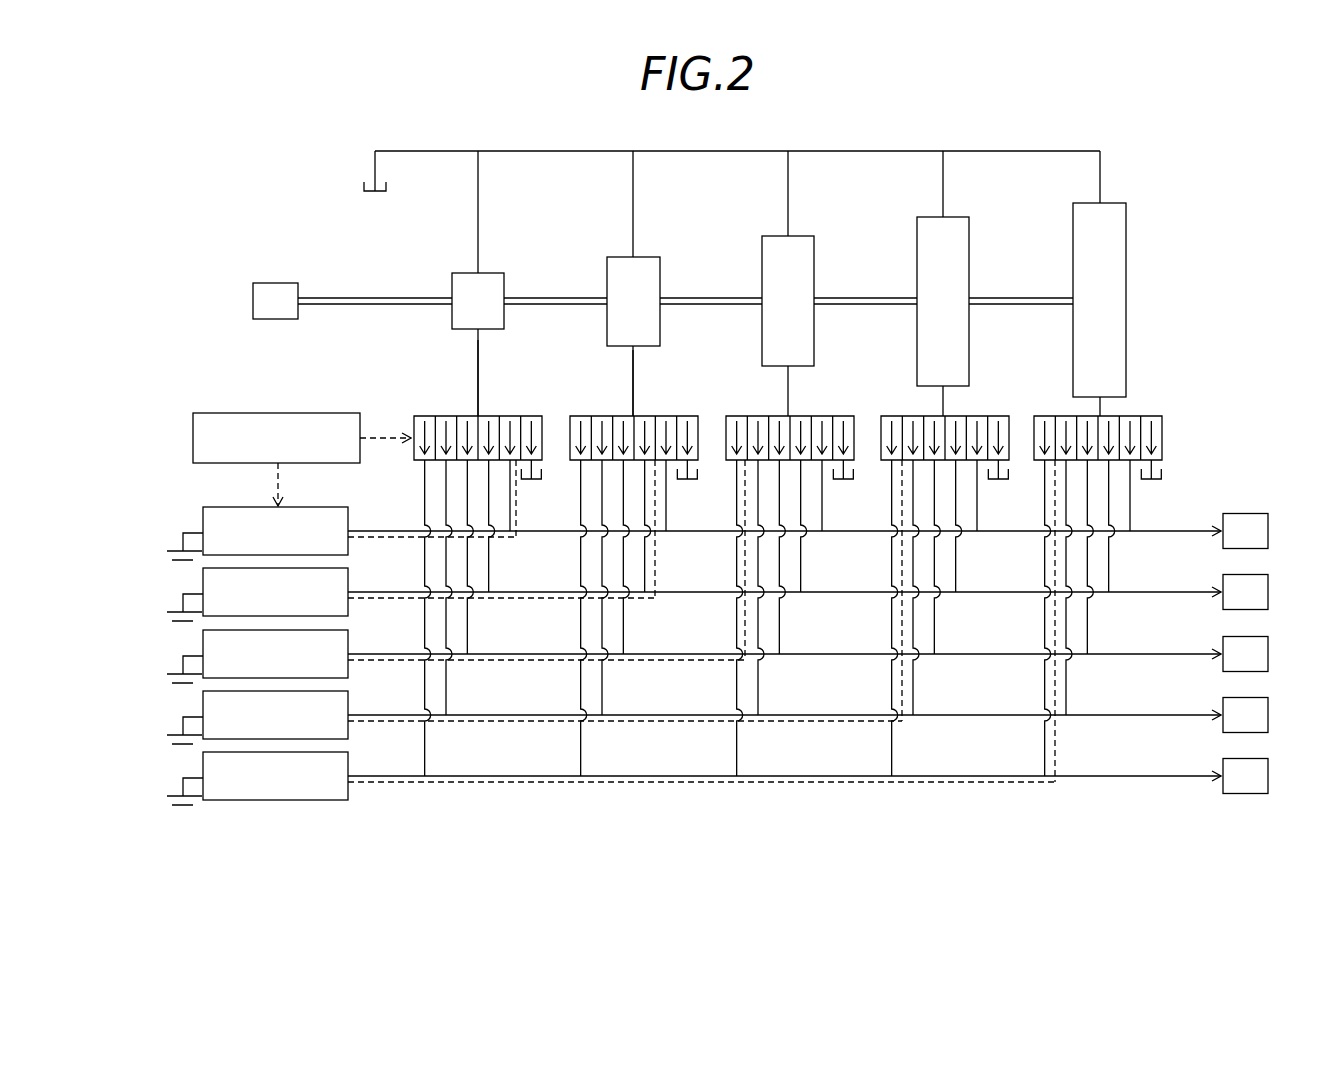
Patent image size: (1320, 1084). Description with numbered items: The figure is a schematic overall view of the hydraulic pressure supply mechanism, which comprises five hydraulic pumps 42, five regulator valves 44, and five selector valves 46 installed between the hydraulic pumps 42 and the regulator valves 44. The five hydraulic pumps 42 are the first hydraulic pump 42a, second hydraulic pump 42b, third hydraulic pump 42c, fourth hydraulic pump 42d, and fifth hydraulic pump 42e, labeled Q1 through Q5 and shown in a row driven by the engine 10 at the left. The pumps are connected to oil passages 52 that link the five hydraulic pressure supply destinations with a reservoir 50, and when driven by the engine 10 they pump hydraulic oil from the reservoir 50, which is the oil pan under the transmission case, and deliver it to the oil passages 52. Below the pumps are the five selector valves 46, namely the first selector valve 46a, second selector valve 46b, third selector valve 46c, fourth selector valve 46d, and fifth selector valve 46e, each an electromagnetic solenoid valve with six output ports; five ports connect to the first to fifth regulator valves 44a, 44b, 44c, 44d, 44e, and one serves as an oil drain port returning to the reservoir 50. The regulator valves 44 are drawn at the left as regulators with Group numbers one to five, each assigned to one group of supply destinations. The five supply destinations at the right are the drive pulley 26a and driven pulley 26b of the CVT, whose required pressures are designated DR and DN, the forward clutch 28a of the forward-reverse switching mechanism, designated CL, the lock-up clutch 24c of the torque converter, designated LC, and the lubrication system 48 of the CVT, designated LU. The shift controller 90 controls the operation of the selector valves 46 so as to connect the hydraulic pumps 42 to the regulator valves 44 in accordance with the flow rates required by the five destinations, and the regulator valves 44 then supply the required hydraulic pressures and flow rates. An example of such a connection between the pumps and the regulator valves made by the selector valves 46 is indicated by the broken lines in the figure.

The engine 10 is at (275, 283).
The hydraulic pumps 42 is at (440, 270).
The first hydraulic pump 42a is at (490, 273).
The second hydraulic pump 42b is at (645, 257).
The third hydraulic pump 42c is at (803, 236).
The fourth hydraulic pump 42d is at (958, 217).
The fifth hydraulic pump 42e is at (1115, 203).
The regulator valves 44 is at (200, 495).
The first regulator valve 44a is at (322, 533).
The second regulator valve 44b is at (391, 594).
The third regulator valve 44c is at (436, 656).
The fourth regulator valve 44d is at (515, 717).
The fifth regulator valve 44e is at (591, 778).
The selector valves 46 is at (435, 380).
The first selector valve 46a is at (493, 415).
The second selector valve 46b is at (671, 415).
The third selector valve 46c is at (826, 415).
The fourth selector valve 46d is at (1003, 415).
The fifth selector valve 46e is at (1150, 415).
The lubrication system 48 is at (808, 767).
The reservoir 50 is at (385, 190).
The oil passages 52 is at (633, 367).
The shift controller 90 is at (305, 413).
The lock-up clutch 24c is at (808, 706).
The drive pulley 26a is at (808, 522).
The driven pulley 26b is at (808, 583).
The forward clutch 28a is at (808, 645).